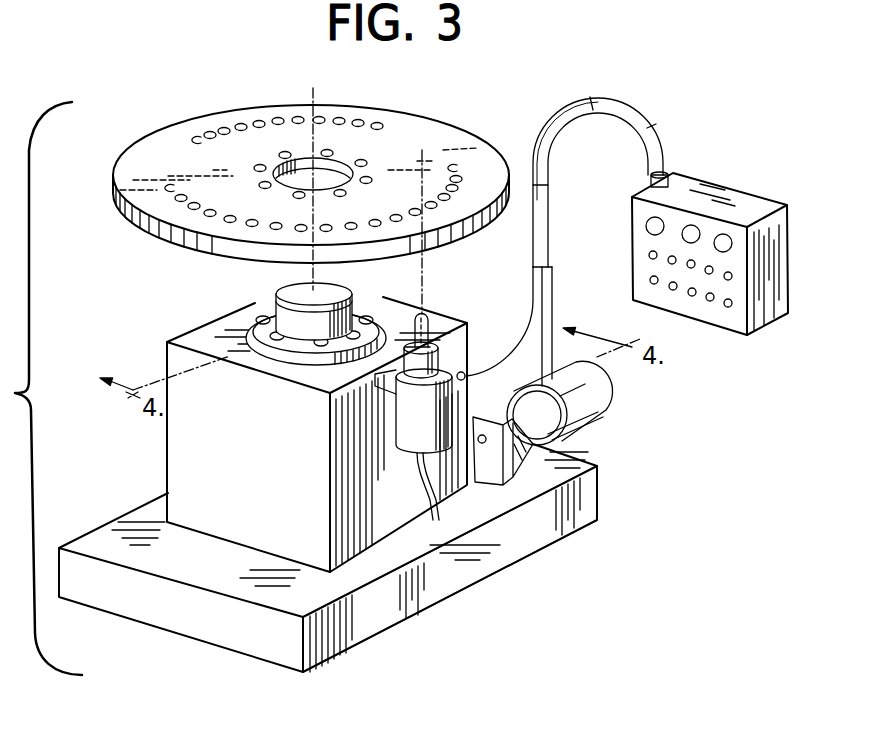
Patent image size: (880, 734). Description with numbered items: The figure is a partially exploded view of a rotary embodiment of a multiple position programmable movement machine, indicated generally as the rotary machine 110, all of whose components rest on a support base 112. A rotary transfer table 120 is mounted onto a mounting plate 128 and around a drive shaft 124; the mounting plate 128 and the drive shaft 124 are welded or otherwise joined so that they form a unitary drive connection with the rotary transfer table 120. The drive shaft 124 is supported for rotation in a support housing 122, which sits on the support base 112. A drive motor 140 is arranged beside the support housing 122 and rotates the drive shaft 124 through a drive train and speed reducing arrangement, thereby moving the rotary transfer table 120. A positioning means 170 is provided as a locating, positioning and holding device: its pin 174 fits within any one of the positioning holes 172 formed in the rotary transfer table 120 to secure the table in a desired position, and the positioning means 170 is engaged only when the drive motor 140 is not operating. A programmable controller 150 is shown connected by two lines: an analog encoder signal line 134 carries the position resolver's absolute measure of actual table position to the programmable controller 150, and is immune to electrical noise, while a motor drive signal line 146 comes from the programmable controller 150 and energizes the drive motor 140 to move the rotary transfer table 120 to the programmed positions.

The rotary multiple position programmable movement machine 110 is at (459, 598).
The support base 112 is at (365, 625).
The rotary transfer table 120 is at (443, 128).
The support housing 122 is at (245, 522).
The drive shaft 124 is at (327, 294).
The mounting plate 128 is at (257, 310).
The encoder signal line 134 is at (533, 337).
The drive motor 140 is at (603, 413).
The motor drive signal line 146 is at (553, 294).
The programmable controller 150 is at (720, 190).
The positioning means 170 is at (447, 462).
The positioning holes 172 is at (230, 223).
The pin 174 is at (426, 320).